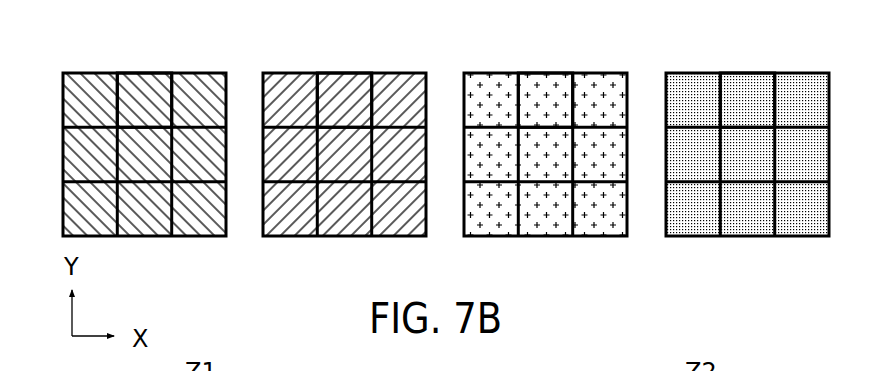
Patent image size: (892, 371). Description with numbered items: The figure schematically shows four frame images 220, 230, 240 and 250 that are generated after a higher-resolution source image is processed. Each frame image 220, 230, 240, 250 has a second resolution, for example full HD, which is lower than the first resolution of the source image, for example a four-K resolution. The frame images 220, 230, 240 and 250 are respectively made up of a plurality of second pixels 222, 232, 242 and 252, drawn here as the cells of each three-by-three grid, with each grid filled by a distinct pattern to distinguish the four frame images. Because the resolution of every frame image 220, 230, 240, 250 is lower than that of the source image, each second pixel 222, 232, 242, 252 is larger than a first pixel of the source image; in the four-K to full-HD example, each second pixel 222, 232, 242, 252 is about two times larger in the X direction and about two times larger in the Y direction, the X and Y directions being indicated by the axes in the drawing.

The frame image 220 is at (92, 66).
The second pixel 222 is at (140, 72).
The frame image 230 is at (292, 66).
The second pixel 232 is at (340, 72).
The frame image 240 is at (492, 66).
The second pixel 242 is at (540, 72).
The frame image 250 is at (694, 66).
The second pixel 252 is at (743, 72).